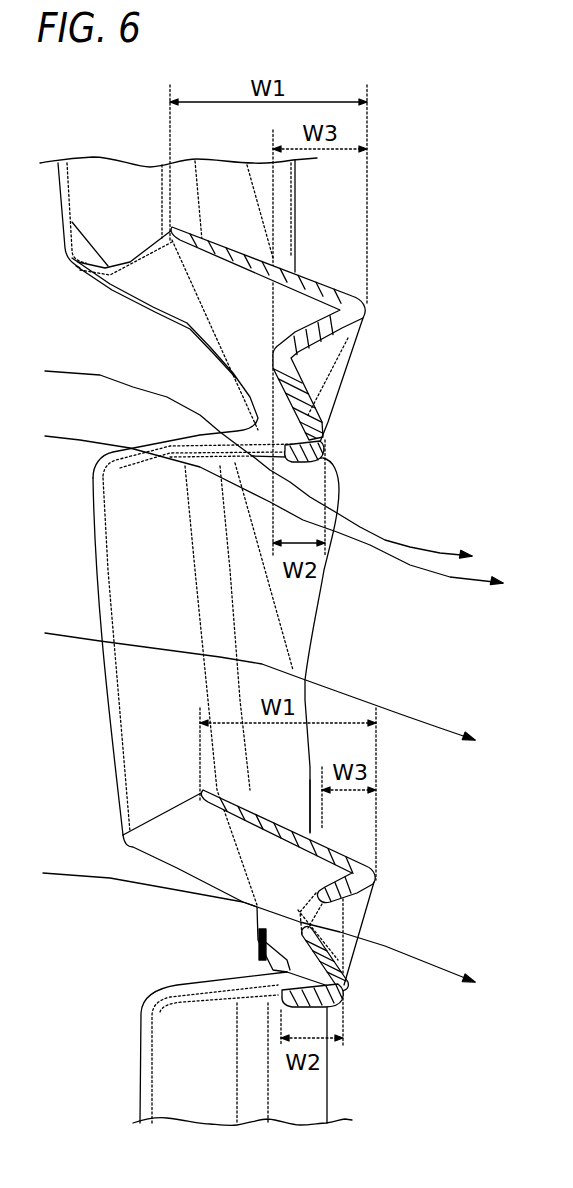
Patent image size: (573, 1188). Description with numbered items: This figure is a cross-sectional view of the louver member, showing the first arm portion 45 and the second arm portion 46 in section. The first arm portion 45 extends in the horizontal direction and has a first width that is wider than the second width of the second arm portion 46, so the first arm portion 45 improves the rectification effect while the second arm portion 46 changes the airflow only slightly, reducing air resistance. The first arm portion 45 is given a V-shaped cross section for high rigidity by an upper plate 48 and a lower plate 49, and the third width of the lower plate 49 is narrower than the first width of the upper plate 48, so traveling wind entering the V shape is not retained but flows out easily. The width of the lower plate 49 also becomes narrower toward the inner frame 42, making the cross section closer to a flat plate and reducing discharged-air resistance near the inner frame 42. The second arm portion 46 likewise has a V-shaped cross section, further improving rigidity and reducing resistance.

The inner frame 42 is at (312, 648).
The first arm portion 45 is at (366, 306).
The second arm portion 46 is at (328, 440).
The upper plate 48 is at (270, 273).
The lower plate 49 is at (338, 346).